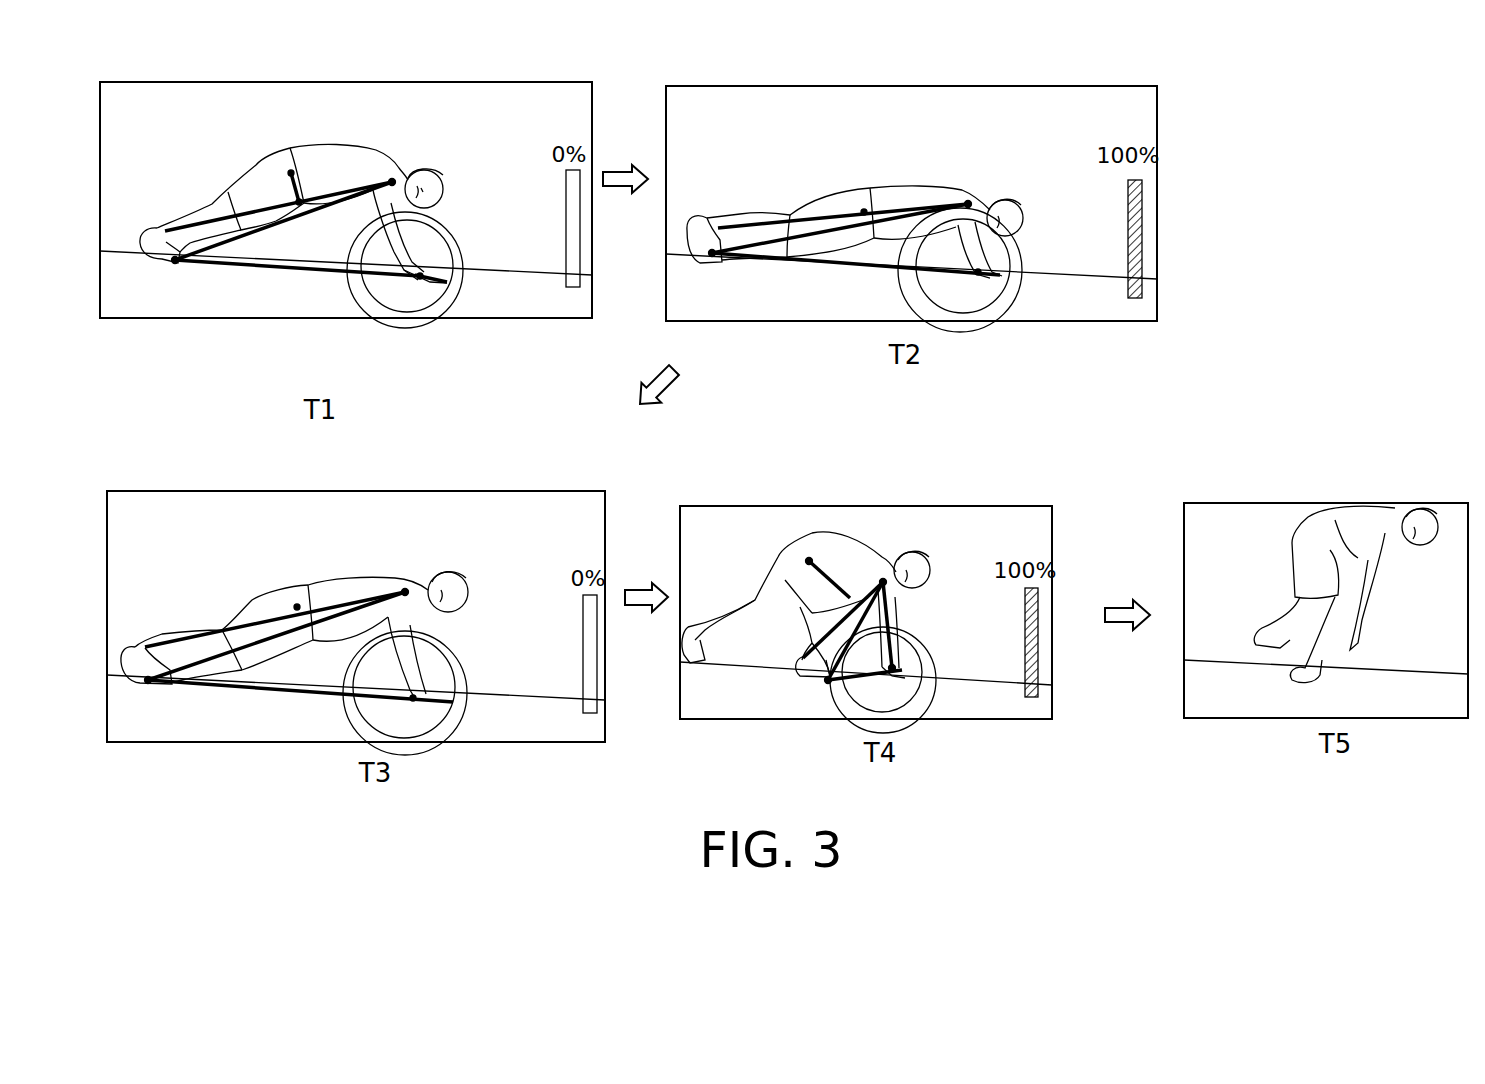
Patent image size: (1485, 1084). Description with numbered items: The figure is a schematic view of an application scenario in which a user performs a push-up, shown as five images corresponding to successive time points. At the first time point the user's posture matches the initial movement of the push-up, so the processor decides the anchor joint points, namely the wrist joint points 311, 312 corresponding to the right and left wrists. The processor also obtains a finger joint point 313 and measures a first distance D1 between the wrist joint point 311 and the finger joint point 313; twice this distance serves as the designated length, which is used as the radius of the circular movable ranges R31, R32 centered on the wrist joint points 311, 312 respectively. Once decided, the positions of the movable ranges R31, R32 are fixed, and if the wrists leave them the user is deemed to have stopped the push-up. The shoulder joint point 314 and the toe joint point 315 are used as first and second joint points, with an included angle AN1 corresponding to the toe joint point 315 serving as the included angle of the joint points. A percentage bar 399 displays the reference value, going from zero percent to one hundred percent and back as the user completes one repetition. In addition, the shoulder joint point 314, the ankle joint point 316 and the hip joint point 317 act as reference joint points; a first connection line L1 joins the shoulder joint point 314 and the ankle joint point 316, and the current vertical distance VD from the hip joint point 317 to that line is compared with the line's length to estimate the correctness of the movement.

The wrist joint point 311 is at (414, 282).
The wrist joint point 312 is at (372, 300).
The finger joint point 313 is at (440, 285).
The shoulder joint point 314 is at (392, 178).
The toe joint point 315 is at (175, 263).
The ankle joint point 316 is at (165, 229).
The hip joint point 317 is at (291, 170).
The percentage bar 399 is at (566, 200).
The first connection line L1 is at (233, 196).
The current vertical distance VD is at (277, 189).
The movable range R31 is at (465, 260).
The movable range R32 is at (344, 266).
The included angle AN1 is at (209, 262).
The first distance D1 is at (424, 280).